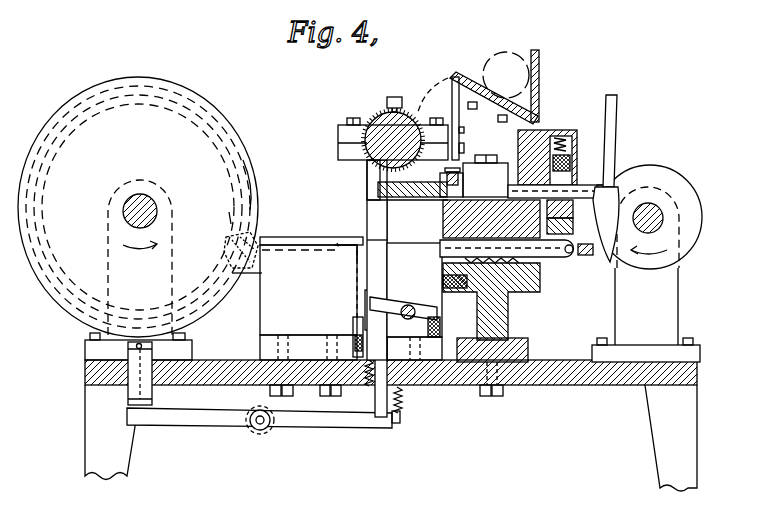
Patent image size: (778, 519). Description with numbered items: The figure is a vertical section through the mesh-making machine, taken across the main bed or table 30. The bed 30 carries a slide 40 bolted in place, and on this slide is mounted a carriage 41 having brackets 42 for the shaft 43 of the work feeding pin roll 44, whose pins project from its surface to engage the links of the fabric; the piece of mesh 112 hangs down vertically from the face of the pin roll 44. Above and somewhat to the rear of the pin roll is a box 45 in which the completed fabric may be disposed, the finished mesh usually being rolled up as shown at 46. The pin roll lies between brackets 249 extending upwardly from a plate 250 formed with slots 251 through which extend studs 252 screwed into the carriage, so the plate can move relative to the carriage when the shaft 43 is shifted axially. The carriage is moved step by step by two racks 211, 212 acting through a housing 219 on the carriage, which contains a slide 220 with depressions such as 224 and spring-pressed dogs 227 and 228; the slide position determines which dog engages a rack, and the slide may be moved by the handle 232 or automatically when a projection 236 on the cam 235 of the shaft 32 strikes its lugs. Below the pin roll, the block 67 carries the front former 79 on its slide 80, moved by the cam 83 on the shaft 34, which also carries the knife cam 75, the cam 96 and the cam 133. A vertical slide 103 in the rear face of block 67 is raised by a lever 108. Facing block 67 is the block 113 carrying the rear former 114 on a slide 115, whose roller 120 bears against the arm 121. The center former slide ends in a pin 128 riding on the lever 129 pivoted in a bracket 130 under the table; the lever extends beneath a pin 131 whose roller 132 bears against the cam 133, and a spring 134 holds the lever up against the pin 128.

The main bed or table 30 is at (572, 387).
The shaft 32 is at (156, 204).
The shaft 34 is at (660, 218).
The slide 40 is at (508, 325).
The carriage 41 is at (527, 290).
The brackets 42 is at (340, 125).
The shaft 43 is at (383, 144).
The work feeding pin roll 44 is at (403, 117).
The box 45 is at (540, 60).
The rolled-up finished mesh 46 is at (498, 55).
The block 67 is at (308, 302).
The cam 75 is at (243, 185).
The front former 79 is at (337, 263).
The slide 80 is at (285, 250).
The cam 83 is at (230, 216).
The cam 96 is at (222, 262).
The vertical slide 103 is at (358, 285).
The lever 108 is at (352, 345).
The piece of mesh 112 is at (362, 222).
The block 113 is at (406, 301).
The rear former 114 is at (381, 240).
The slide 115 is at (553, 258).
The roller 120 is at (566, 258).
The arm 121 is at (592, 258).
The pin 128 is at (383, 404).
The lever 129 is at (367, 421).
The bracket 130 is at (250, 409).
The pin 131 is at (152, 404).
The roller 132 is at (178, 353).
The cam 133 is at (103, 80).
The spring 134 is at (405, 411).
The rack 211 is at (571, 230).
The rack 212 is at (571, 209).
The housing 219 is at (547, 130).
The slide 220 is at (505, 160).
The depression 224 is at (590, 185).
The dog 227 is at (565, 172).
The dog 228 is at (559, 160).
The handle 232 is at (629, 178).
The cam 235 is at (678, 177).
The projection 236 is at (615, 267).
The brackets 249 is at (440, 170).
The plate 250 is at (349, 180).
The slots 251 is at (440, 200).
The studs 252 is at (455, 175).